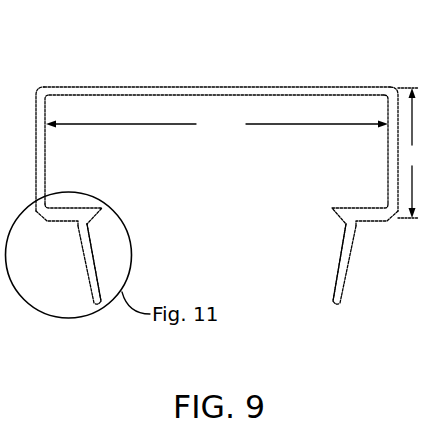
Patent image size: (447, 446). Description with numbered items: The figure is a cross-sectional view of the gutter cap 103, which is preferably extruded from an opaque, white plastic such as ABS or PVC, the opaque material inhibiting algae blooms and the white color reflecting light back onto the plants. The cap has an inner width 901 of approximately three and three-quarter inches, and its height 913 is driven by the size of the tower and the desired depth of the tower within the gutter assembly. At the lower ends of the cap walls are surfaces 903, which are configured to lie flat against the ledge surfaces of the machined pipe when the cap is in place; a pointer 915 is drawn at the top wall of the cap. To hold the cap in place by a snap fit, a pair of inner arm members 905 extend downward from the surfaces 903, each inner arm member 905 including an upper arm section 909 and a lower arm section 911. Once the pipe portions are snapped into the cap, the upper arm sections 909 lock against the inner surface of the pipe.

The gutter cap 103 is at (217, 192).
The top wall of housing 915 is at (236, 84).
The inner width 901 is at (217, 125).
The height 913 is at (416, 153).
The surfaces 903 is at (217, 286).
The upper arm section 909 is at (88, 229).
The inner arm member 905 is at (106, 251).
The lower arm section 911 is at (93, 278).